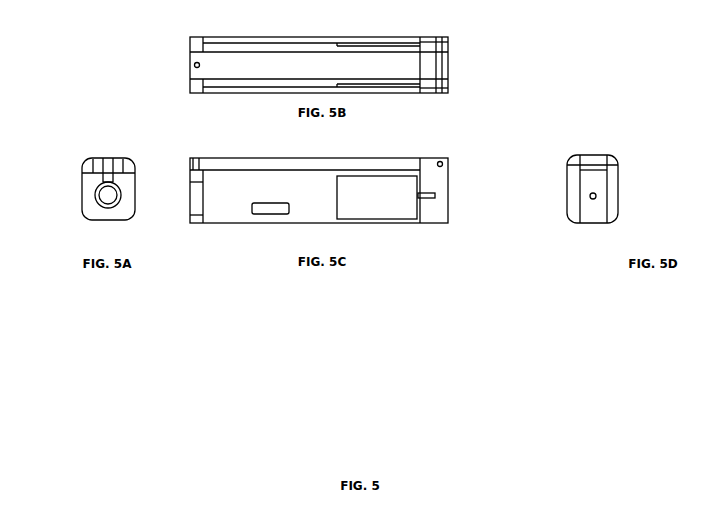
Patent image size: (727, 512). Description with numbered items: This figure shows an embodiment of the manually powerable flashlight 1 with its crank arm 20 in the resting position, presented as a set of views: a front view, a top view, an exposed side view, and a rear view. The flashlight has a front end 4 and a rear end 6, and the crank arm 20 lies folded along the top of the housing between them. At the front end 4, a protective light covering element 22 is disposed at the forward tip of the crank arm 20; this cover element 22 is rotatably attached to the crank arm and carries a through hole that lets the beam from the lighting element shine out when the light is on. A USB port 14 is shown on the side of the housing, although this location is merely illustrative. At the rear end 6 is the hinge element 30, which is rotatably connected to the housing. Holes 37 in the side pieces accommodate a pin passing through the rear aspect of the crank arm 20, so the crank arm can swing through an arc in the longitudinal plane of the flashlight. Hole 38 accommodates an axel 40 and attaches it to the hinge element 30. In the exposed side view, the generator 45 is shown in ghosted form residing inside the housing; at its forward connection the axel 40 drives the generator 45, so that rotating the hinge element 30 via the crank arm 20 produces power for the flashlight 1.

In FIG. 5, the manually powerable flashlight 1 is at (333, 323).
In FIG. 5, the front end 4 is at (156, 50).
In FIG. 5, the rear end 6 is at (478, 49).
In FIG. 5C, the USB port 14 is at (265, 214).
In FIG. 5B, the crank arm 20 is at (273, 60).
In FIG. 5C, the crank arm 20 is at (268, 167).
In FIG. 5C, the protective light covering element 22 is at (192, 217).
In FIG. 5A, the protective light covering element 22 is at (92, 212).
In FIG. 5C, the hinge element 30 is at (442, 196).
In FIG. 5D, the hinge element 30 is at (615, 180).
In FIG. 5C, the hole 37 is at (444, 160).
In FIG. 5D, the hole 38 is at (597, 197).
In FIG. 5C, the axel 40 is at (430, 198).
In FIG. 5C, the generator 45 is at (392, 207).